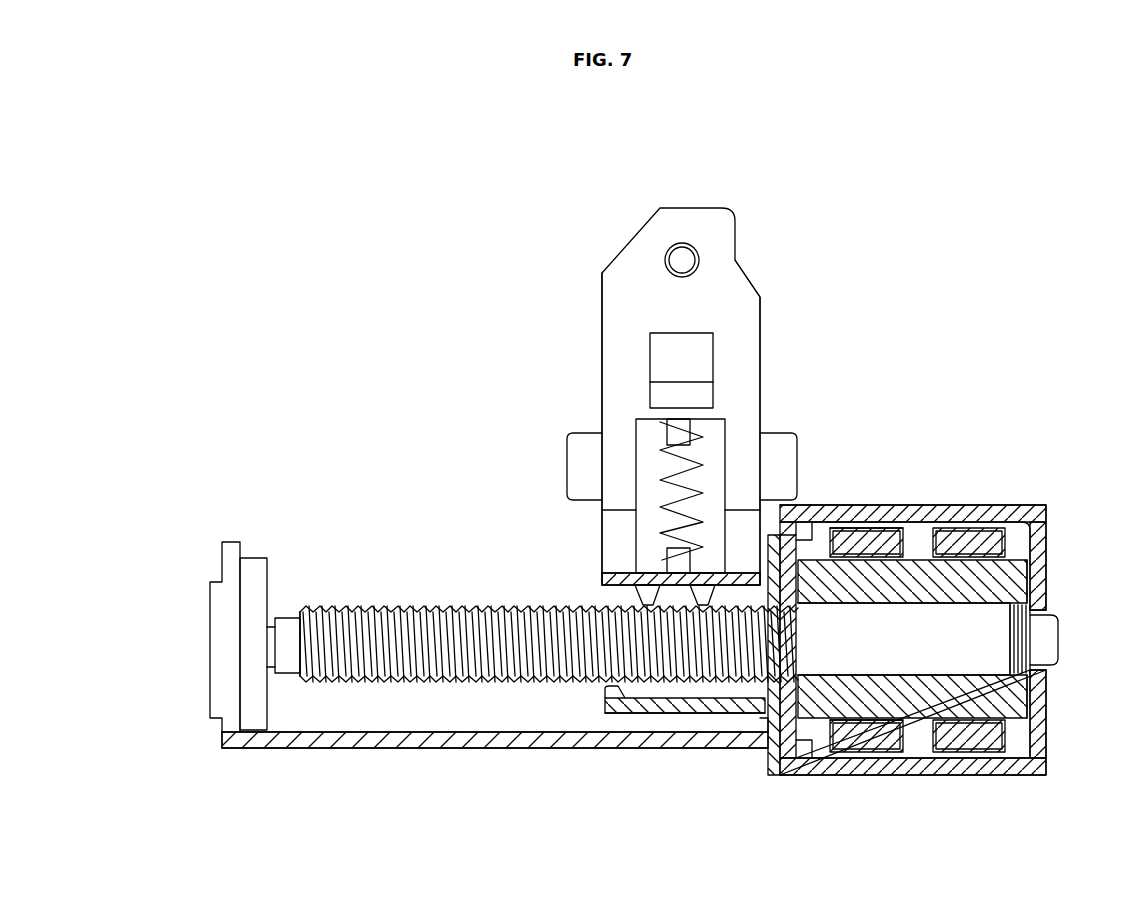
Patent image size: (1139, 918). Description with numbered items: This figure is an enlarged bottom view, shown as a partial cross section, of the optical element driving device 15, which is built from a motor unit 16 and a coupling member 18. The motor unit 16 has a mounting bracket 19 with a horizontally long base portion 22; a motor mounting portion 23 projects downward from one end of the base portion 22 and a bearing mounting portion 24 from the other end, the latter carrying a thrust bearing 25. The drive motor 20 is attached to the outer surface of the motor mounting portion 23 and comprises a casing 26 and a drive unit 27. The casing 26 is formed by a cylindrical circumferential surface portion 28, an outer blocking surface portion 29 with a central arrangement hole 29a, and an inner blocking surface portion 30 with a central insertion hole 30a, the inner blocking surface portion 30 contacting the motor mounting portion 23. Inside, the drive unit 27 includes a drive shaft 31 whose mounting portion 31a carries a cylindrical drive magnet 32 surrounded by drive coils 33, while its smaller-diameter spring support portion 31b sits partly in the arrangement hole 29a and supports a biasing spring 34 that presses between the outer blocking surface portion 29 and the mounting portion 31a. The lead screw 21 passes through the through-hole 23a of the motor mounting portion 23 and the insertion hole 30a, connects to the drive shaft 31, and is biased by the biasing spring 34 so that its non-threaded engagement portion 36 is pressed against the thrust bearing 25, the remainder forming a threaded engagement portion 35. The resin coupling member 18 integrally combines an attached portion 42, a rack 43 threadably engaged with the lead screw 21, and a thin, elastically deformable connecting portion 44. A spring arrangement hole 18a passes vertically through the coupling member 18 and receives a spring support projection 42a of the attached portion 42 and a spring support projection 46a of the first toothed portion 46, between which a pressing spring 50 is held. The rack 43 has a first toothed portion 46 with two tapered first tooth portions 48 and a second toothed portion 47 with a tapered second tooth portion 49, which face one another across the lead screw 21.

The optical element driving device 15 is at (330, 138).
The motor unit 16 is at (357, 832).
The coupling member 18 is at (741, 262).
The spring arrangement hole 18a is at (645, 500).
The mounting bracket 19 is at (396, 750).
The drive motor 20 is at (886, 521).
The lead screw 21 is at (338, 612).
The base portion 22 is at (282, 750).
The motor mounting portion 23 is at (760, 723).
The through-hole 23a is at (796, 580).
The bearing mounting portion 24 is at (231, 548).
The thrust bearing 25 is at (251, 560).
The casing 26 is at (1001, 522).
The drive unit 27 is at (1041, 506).
The circumferential surface portion 28 is at (961, 522).
The outer blocking surface portion 29 is at (1043, 711).
The arrangement hole 29a is at (1036, 612).
The inner blocking surface portion 30 is at (812, 746).
The insertion hole 30a is at (806, 560).
The drive shaft 31 is at (870, 660).
The mounting portion 31a is at (951, 652).
The spring support portion 31b is at (1046, 638).
The drive magnet 32 is at (918, 706).
The drive coils 33 is at (913, 527).
The biasing spring 34 is at (1031, 648).
The threaded engagement portion 35 is at (378, 608).
The non-threaded engagement portion 36 is at (288, 622).
The attached portion 42 is at (746, 314).
The spring support projection 42a is at (724, 424).
The rack 43 is at (672, 701).
The connecting portion 44 is at (590, 572).
The first toothed portion 46 is at (598, 580).
The spring support projection 46a is at (614, 558).
The second toothed portion 47 is at (700, 714).
The first tooth portions 48 is at (622, 592).
The second tooth portion 49 is at (606, 690).
The pressing spring 50 is at (614, 450).